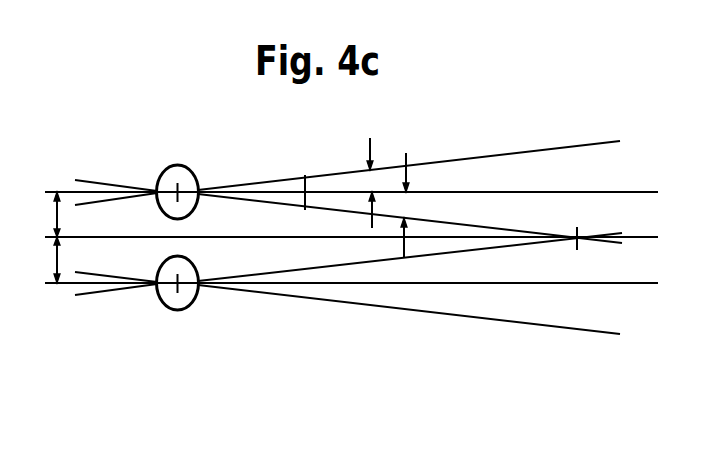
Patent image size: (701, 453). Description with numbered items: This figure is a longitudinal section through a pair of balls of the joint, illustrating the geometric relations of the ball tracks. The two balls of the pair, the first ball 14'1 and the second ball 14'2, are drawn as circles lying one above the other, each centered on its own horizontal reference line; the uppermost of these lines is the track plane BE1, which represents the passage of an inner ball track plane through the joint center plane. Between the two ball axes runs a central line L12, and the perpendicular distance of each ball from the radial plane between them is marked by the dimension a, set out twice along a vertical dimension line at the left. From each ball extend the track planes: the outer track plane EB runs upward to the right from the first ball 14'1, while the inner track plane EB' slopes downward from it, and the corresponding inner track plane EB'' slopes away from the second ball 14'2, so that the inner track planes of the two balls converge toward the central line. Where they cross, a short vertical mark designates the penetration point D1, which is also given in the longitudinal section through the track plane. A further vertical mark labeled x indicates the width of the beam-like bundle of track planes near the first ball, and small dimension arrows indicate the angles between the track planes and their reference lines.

The first ball of pair of balls 14'1 is at (196, 150).
The second ball of pair of balls 14'2 is at (197, 325).
The outer track plane EB is at (347, 148).
The inner track plane EB' is at (348, 174).
The inner track plane EB'' is at (347, 326).
The track plane BE1 is at (648, 192).
The optical axis / connecting line L12 is at (642, 239).
The penetration point D1 is at (573, 235).
The beam width x is at (305, 182).
The perpendicular distance of balls from radial plane a is at (50, 237).